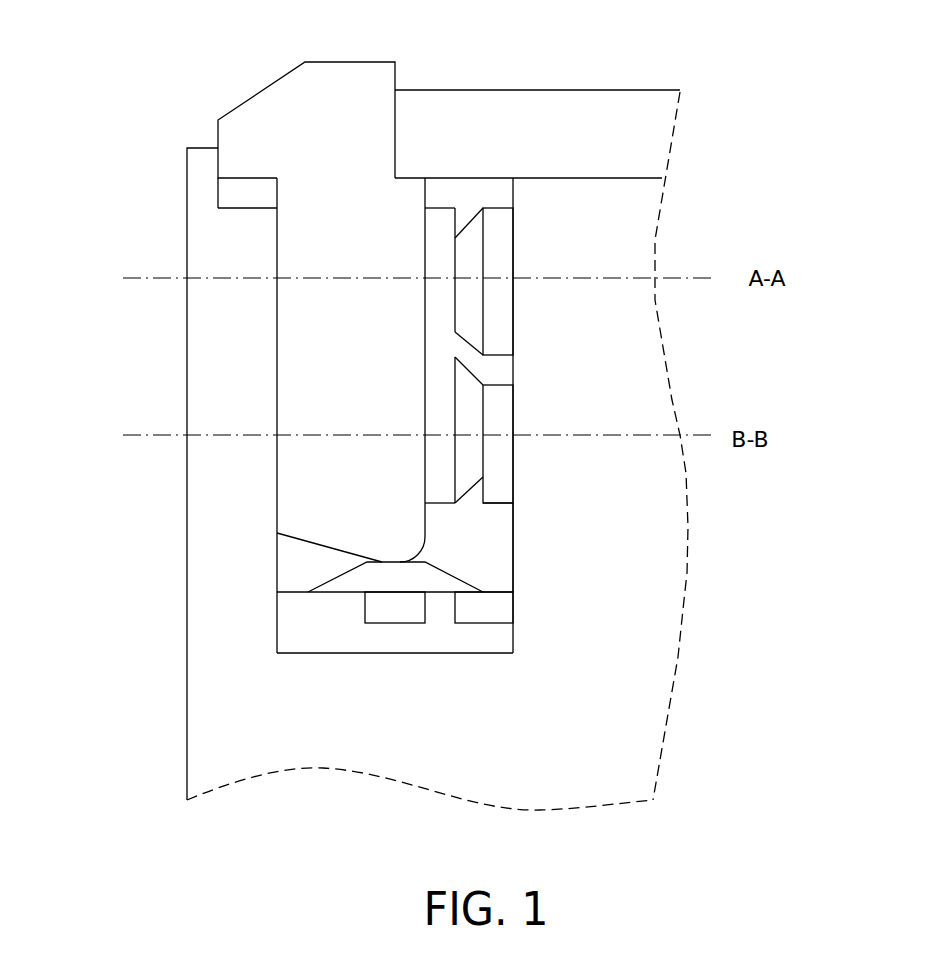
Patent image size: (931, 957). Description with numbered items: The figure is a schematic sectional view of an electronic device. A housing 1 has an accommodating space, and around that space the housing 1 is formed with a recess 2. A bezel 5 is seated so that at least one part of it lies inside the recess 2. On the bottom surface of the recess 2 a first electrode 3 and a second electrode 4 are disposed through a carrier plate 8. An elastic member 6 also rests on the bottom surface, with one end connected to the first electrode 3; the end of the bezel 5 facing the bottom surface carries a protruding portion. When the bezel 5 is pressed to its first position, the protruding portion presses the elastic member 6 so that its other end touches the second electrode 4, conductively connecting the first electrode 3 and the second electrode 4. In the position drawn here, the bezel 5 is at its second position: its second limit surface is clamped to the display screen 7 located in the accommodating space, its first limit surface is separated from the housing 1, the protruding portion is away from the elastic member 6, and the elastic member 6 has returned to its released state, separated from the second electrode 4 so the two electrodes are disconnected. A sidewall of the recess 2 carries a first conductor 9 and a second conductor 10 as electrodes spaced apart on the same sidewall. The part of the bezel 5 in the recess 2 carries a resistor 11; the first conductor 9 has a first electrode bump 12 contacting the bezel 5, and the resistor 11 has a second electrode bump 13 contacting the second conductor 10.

The housing 1 is at (230, 245).
The recess 2 is at (483, 556).
The first electrode 3 is at (485, 607).
The second electrode 4 is at (380, 607).
The bezel 5 is at (287, 113).
The elastic member 6 is at (325, 583).
The display screen 7 is at (535, 150).
The carrier plate 8 is at (425, 633).
The first conductor 9 is at (490, 235).
The second conductor 10 is at (490, 412).
The resistor 11 is at (440, 328).
The first electrode bump 12 is at (468, 313).
The second electrode bump 13 is at (478, 402).